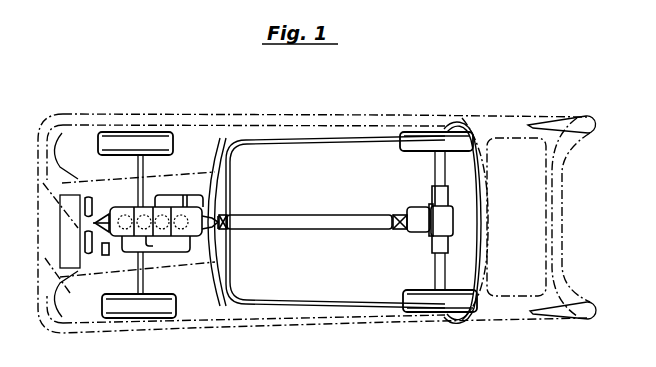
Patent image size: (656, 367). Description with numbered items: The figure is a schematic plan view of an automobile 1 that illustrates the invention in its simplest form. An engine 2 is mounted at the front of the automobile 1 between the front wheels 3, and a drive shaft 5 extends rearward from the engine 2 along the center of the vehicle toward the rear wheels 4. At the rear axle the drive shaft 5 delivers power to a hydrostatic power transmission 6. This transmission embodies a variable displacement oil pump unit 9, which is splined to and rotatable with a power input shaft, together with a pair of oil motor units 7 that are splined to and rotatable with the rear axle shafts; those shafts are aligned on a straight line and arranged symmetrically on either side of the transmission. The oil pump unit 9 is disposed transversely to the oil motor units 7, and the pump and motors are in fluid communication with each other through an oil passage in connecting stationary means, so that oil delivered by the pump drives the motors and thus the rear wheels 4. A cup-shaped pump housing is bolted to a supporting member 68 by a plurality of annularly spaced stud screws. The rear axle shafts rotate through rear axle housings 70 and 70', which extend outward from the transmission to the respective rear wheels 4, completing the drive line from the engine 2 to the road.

The automobile 1 is at (312, 138).
The engine 2 is at (125, 210).
The front wheels 3 is at (148, 132).
The rear wheels 4 is at (434, 132).
The drive shaft 5 is at (328, 216).
The hydrostatic power transmission 6 is at (424, 233).
The oil motor unit 7 is at (444, 196).
The variable displacement oil pump unit 9 is at (421, 212).
The supporting member 68 is at (447, 221).
The rear axle housing 70 is at (422, 271).
The rear axle housing 70' is at (425, 168).